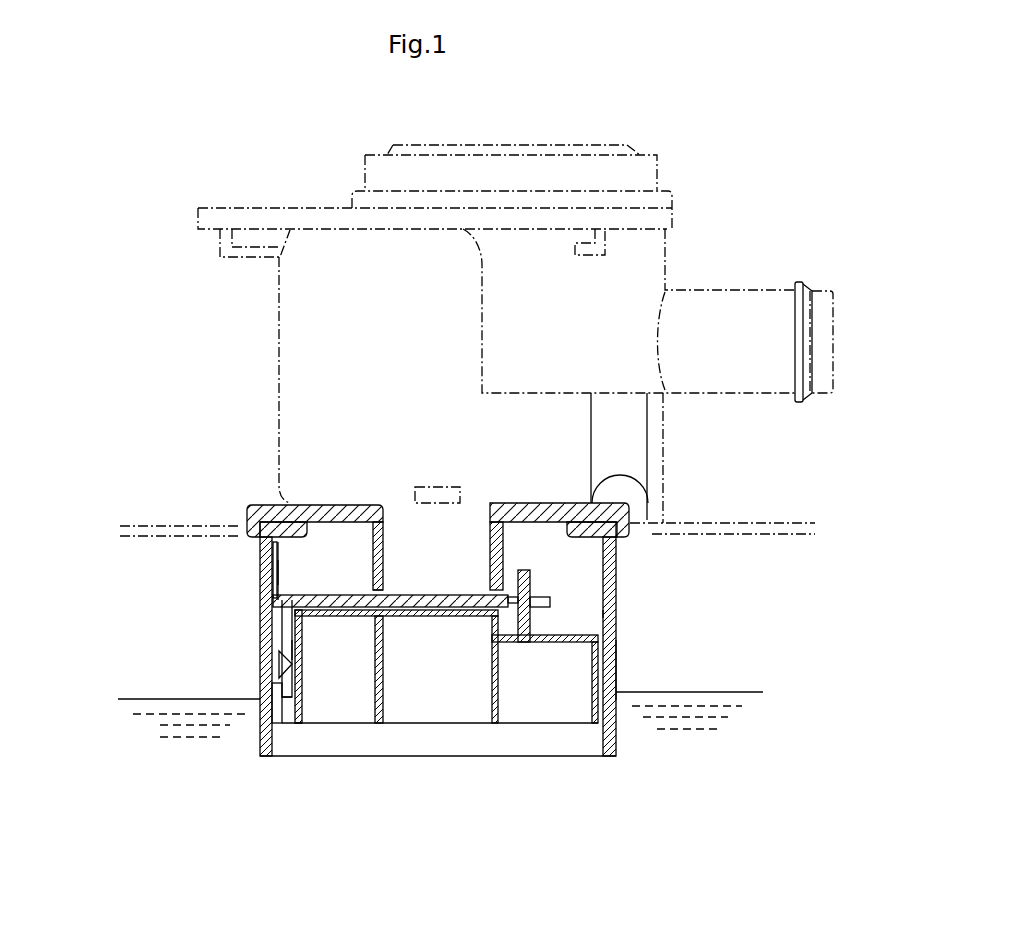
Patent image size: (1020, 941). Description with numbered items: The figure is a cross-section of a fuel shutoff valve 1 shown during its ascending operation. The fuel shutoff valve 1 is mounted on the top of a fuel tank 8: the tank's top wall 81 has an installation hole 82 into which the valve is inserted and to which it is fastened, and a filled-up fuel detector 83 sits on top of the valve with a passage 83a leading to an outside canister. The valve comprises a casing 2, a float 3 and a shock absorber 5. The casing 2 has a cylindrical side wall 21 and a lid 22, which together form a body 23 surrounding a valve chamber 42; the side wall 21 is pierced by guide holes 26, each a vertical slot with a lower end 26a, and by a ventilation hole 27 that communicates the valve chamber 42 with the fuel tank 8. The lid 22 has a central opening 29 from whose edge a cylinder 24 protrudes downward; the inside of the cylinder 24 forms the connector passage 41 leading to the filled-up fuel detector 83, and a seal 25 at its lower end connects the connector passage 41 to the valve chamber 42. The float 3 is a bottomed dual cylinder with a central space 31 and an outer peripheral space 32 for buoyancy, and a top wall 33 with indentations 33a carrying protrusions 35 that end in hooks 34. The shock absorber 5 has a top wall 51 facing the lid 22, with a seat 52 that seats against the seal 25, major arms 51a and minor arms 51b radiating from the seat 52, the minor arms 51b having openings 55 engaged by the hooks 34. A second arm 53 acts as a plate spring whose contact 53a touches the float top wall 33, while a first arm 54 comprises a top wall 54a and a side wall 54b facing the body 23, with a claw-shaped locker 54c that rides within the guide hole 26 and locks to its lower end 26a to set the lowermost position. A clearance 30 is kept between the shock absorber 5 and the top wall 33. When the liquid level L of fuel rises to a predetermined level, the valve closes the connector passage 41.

The fuel shutoff valve 1 is at (238, 516).
The casing 2 is at (447, 627).
The side wall 21 is at (262, 632).
The lid 22 is at (297, 506).
The body 23 is at (603, 606).
The cylinder 24 is at (394, 545).
The seal 25 is at (468, 530).
The guide hole 26 is at (178, 702).
The lower end of guide hole 26a is at (262, 707).
The ventilation hole 27 is at (603, 660).
The opening 29 is at (382, 560).
The float 3 is at (425, 732).
The clearance 30 is at (354, 612).
The central space 31 is at (463, 707).
The outer peripheral space 32 is at (564, 737).
The top wall 33 is at (405, 616).
The indentation 33a is at (565, 645).
The hook 34 is at (548, 583).
The protrusion 35 is at (618, 708).
The connector passage 41 is at (449, 548).
The valve chamber 42 is at (603, 613).
The shock absorber 5 is at (354, 701).
The top wall 51 is at (481, 446).
The major arm 51a is at (341, 532).
The minor arm 51b is at (508, 590).
The seat 52 is at (362, 616).
The second arm 53 is at (275, 562).
The contact 53a is at (303, 725).
The first arm 54 is at (169, 632).
The top wall 54a is at (280, 579).
The side wall 54b is at (262, 651).
The locker 54c is at (180, 699).
The opening 55 is at (505, 607).
The fuel tank 8 is at (720, 518).
The top wall 81 is at (152, 524).
The installation hole 82 is at (630, 497).
The filled-up fuel detector 83 is at (665, 260).
The passage 83a is at (833, 337).
The liquid level L is at (740, 692).